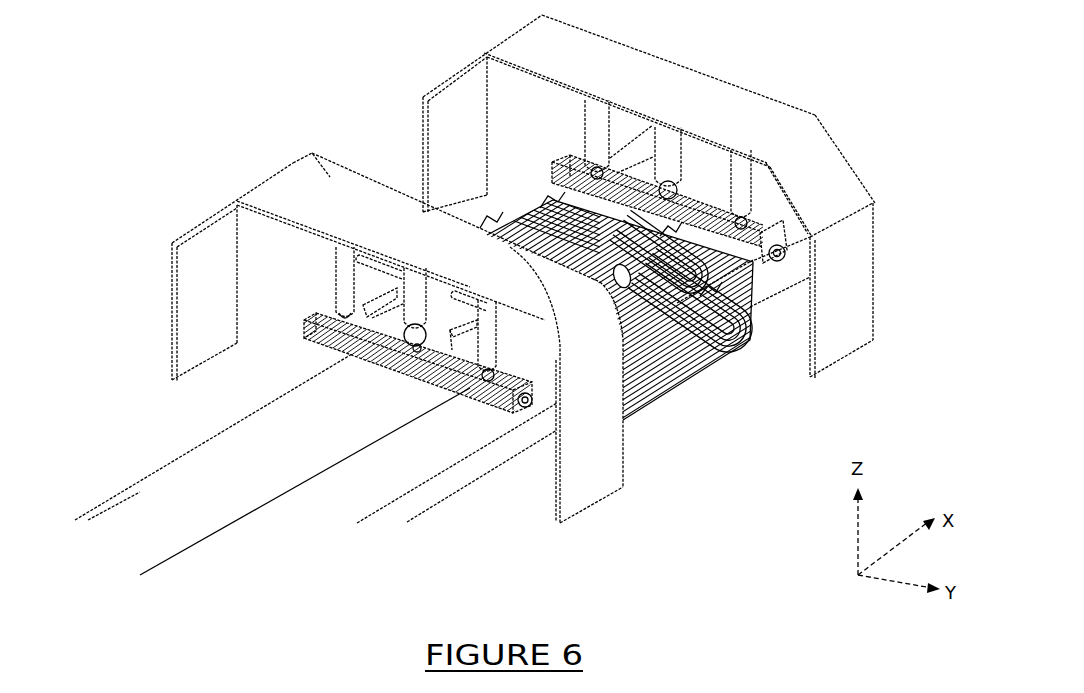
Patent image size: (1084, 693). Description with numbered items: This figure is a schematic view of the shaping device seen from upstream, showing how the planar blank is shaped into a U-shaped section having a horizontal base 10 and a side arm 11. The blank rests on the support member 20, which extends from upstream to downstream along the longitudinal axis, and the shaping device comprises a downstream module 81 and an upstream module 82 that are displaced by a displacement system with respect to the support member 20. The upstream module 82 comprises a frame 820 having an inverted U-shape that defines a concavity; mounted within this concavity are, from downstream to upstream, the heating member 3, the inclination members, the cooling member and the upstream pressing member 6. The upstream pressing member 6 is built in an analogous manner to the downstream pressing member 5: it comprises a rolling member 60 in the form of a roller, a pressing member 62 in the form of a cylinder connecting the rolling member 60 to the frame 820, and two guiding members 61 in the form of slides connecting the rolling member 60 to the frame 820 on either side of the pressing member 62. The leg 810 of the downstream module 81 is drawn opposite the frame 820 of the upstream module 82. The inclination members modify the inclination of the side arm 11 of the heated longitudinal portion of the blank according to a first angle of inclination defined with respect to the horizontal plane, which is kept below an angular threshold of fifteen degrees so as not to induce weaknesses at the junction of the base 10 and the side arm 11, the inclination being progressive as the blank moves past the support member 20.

The heating member 3 is at (667, 337).
The downstream pressing member 5 is at (704, 158).
The upstream pressing member 6 is at (385, 294).
The horizontal base 10 is at (170, 488).
The left side arm 11 is at (732, 265).
The support member 20 is at (473, 467).
The rolling member 60 is at (403, 360).
The guiding member 61 is at (350, 298).
The pressing member 62 is at (411, 305).
The downstream module 81 is at (671, 200).
The upstream module 82 is at (391, 362).
The leg of first guard 810 is at (830, 355).
The frame 820 is at (575, 508).